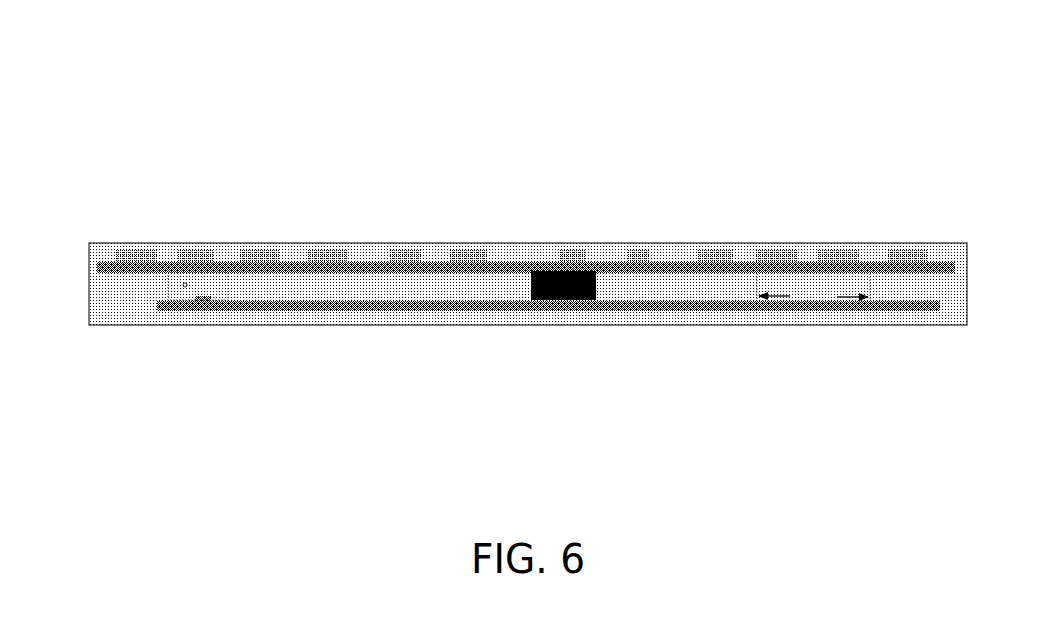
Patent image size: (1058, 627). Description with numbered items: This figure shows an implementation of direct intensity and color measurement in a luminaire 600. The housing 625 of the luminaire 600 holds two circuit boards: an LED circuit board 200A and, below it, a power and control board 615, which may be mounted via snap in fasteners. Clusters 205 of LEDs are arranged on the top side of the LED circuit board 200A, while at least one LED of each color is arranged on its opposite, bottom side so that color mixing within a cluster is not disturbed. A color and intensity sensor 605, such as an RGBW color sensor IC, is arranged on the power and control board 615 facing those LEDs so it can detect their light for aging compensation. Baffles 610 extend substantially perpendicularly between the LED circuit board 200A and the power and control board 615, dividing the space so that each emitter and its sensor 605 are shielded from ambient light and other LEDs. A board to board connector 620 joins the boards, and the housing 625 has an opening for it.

The luminaire 600 is at (272, 51).
The housing 625 is at (502, 311).
The clusters 205 is at (259, 254).
The LED circuit board 200A is at (680, 260).
The power and control board 615 is at (520, 310).
The board to board connector 620 is at (527, 276).
The color and intensity sensor 605 is at (203, 303).
The baffles 610 is at (813, 333).